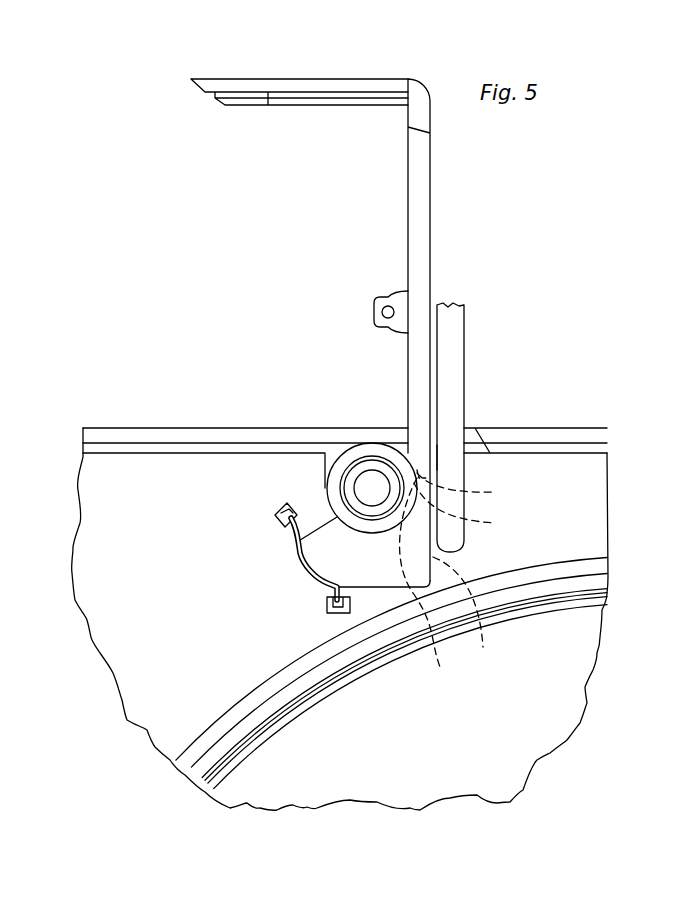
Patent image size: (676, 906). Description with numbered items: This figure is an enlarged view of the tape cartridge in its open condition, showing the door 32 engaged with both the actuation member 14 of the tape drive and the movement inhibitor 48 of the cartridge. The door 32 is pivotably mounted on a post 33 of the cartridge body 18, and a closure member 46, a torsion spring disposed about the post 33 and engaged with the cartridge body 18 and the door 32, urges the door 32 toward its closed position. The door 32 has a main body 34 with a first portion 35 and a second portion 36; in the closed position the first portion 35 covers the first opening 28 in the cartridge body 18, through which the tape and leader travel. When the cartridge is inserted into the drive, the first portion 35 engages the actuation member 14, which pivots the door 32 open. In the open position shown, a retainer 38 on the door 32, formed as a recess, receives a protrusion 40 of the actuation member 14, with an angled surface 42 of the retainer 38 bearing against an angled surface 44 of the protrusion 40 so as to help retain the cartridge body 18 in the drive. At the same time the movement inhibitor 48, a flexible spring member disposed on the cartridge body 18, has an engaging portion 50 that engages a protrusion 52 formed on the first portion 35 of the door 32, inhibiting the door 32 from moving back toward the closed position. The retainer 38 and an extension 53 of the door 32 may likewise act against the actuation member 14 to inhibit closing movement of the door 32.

The actuation member 14 is at (464, 356).
The cartridge body 18 is at (562, 428).
The first opening 28 is at (200, 428).
The door 32 is at (430, 178).
The post 33 is at (371, 470).
The main body 34 is at (430, 208).
The first portion 35 is at (430, 240).
The second portion 36 is at (320, 78).
The retainer 38 is at (409, 515).
The protrusion 40 is at (426, 587).
The angled surface 42 is at (469, 486).
The angled surface 44 is at (437, 448).
The closure member 46 is at (338, 460).
The movement inhibitor 48 is at (297, 542).
The engaging portion 50 is at (303, 567).
The protrusion 52 is at (358, 588).
The extension 53 is at (465, 616).